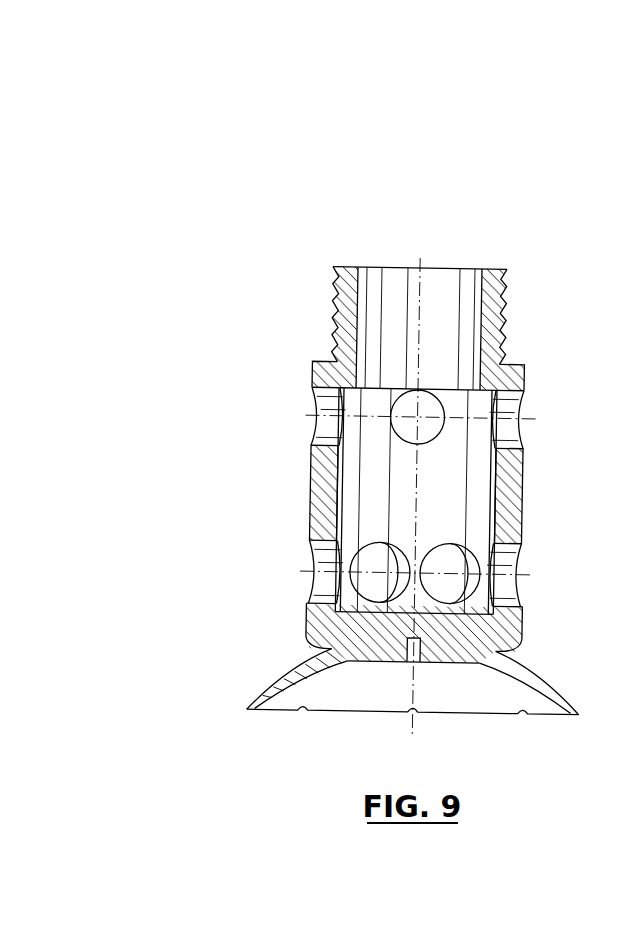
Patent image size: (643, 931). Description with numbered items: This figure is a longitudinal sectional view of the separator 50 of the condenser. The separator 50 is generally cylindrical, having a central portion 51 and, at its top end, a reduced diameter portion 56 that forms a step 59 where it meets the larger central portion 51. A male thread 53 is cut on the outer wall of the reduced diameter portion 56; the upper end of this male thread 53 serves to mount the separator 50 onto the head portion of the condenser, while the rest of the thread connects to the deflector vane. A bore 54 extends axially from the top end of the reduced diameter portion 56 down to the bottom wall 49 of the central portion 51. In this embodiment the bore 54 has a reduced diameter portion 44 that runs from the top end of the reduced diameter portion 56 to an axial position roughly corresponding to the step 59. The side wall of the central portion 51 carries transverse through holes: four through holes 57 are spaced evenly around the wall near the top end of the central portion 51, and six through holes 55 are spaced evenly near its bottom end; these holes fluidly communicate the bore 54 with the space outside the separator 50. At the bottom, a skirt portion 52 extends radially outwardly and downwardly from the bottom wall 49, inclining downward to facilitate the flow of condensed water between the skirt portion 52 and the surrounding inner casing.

The separator 50 is at (537, 112).
The reduced diameter portion of the bore 44 is at (443, 278).
The bore 54 is at (392, 278).
The reduced diameter portion 56 is at (335, 313).
The male thread 53 is at (505, 298).
The step 59 is at (525, 363).
The through holes 57 is at (318, 432).
The central portion 51 is at (515, 490).
The through holes 55 is at (318, 582).
The bottom wall 49 is at (502, 624).
The skirt portion 52 is at (548, 690).